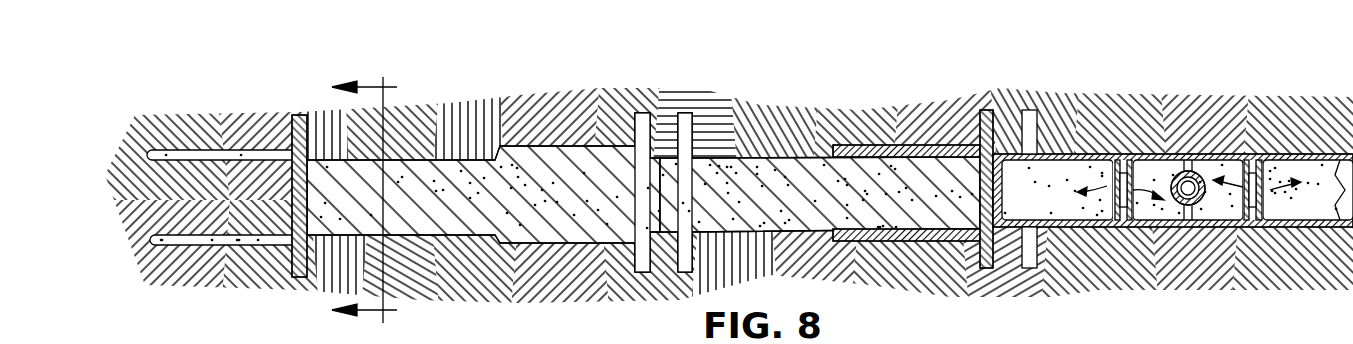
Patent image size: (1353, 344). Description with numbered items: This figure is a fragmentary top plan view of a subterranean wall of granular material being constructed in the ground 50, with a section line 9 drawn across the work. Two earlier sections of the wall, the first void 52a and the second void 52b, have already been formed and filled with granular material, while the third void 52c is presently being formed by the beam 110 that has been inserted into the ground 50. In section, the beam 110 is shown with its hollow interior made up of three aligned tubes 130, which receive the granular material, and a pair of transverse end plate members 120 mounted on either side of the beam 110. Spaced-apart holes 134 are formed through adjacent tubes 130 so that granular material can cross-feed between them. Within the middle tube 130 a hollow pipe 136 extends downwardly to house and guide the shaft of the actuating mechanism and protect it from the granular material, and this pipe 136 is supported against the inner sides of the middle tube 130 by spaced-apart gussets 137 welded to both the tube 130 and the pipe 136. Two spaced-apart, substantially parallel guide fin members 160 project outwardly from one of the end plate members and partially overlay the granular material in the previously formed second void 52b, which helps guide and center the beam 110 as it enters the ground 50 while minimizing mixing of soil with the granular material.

The section line 9- 9 is at (375, 199).
The ground 50 is at (523, 125).
The first void 52a is at (457, 207).
The second void 52b is at (920, 217).
The third void 52c is at (1285, 207).
The beam 110 is at (1173, 192).
The transverse end plate member 120 is at (975, 115).
The tube 130 is at (1075, 153).
The holes 134 is at (1255, 157).
The hollow pipe 136 is at (1178, 178).
The gussets 137 is at (1195, 173).
The guide fin member 160 is at (863, 227).